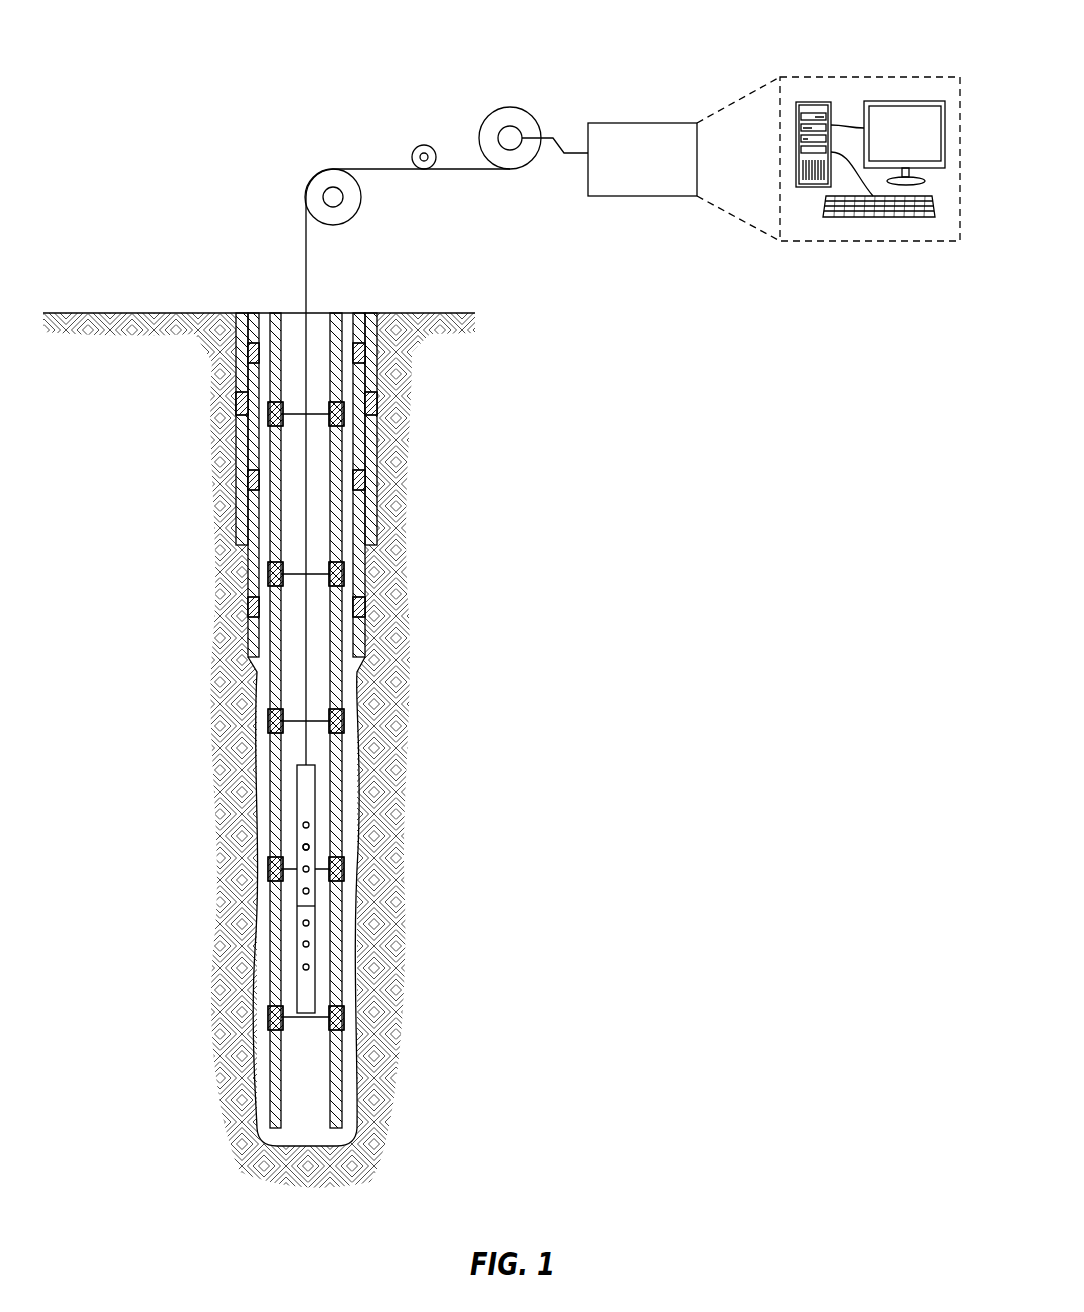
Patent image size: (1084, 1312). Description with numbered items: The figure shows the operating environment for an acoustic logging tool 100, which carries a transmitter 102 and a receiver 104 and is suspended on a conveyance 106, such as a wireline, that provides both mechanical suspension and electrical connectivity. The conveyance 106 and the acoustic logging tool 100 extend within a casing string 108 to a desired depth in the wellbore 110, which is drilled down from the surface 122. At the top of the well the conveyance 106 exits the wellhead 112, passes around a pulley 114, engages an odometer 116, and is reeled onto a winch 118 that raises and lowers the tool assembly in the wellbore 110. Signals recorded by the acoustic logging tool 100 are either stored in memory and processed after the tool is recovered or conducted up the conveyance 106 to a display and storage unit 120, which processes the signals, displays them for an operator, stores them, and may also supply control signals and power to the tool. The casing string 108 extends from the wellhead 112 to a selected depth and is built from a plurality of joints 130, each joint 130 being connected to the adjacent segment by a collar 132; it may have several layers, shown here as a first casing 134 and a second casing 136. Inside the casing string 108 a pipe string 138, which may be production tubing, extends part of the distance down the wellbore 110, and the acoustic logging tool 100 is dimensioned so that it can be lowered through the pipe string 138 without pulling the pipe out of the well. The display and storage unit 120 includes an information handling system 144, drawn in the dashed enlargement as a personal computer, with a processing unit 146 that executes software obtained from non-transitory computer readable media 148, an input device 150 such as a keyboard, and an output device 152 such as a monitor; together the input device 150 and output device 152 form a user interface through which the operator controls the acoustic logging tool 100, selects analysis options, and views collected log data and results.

The acoustic logging tool 100 is at (303, 889).
The transmitter 102 is at (310, 826).
The receiver 104 is at (310, 848).
The conveyance 106 is at (307, 272).
The casing string 108 is at (313, 703).
The wellbore 110 is at (357, 660).
The wellhead 112 is at (293, 306).
The pulley 114 is at (305, 185).
The odometer 116 is at (425, 145).
The winch 118 is at (530, 112).
The display and storage unit 120 is at (655, 123).
The surface 122 is at (85, 313).
The joint 130 is at (247, 567).
The collar 132 is at (247, 608).
The first casing 134 is at (360, 570).
The second casing 136 is at (370, 522).
The pipe string 138 is at (343, 1085).
The information handling system 144 is at (853, 77).
The processing unit 146 is at (848, 174).
The non-transitory computer readable media 148 is at (812, 102).
The input device 150 is at (812, 197).
The output device 152 is at (905, 101).